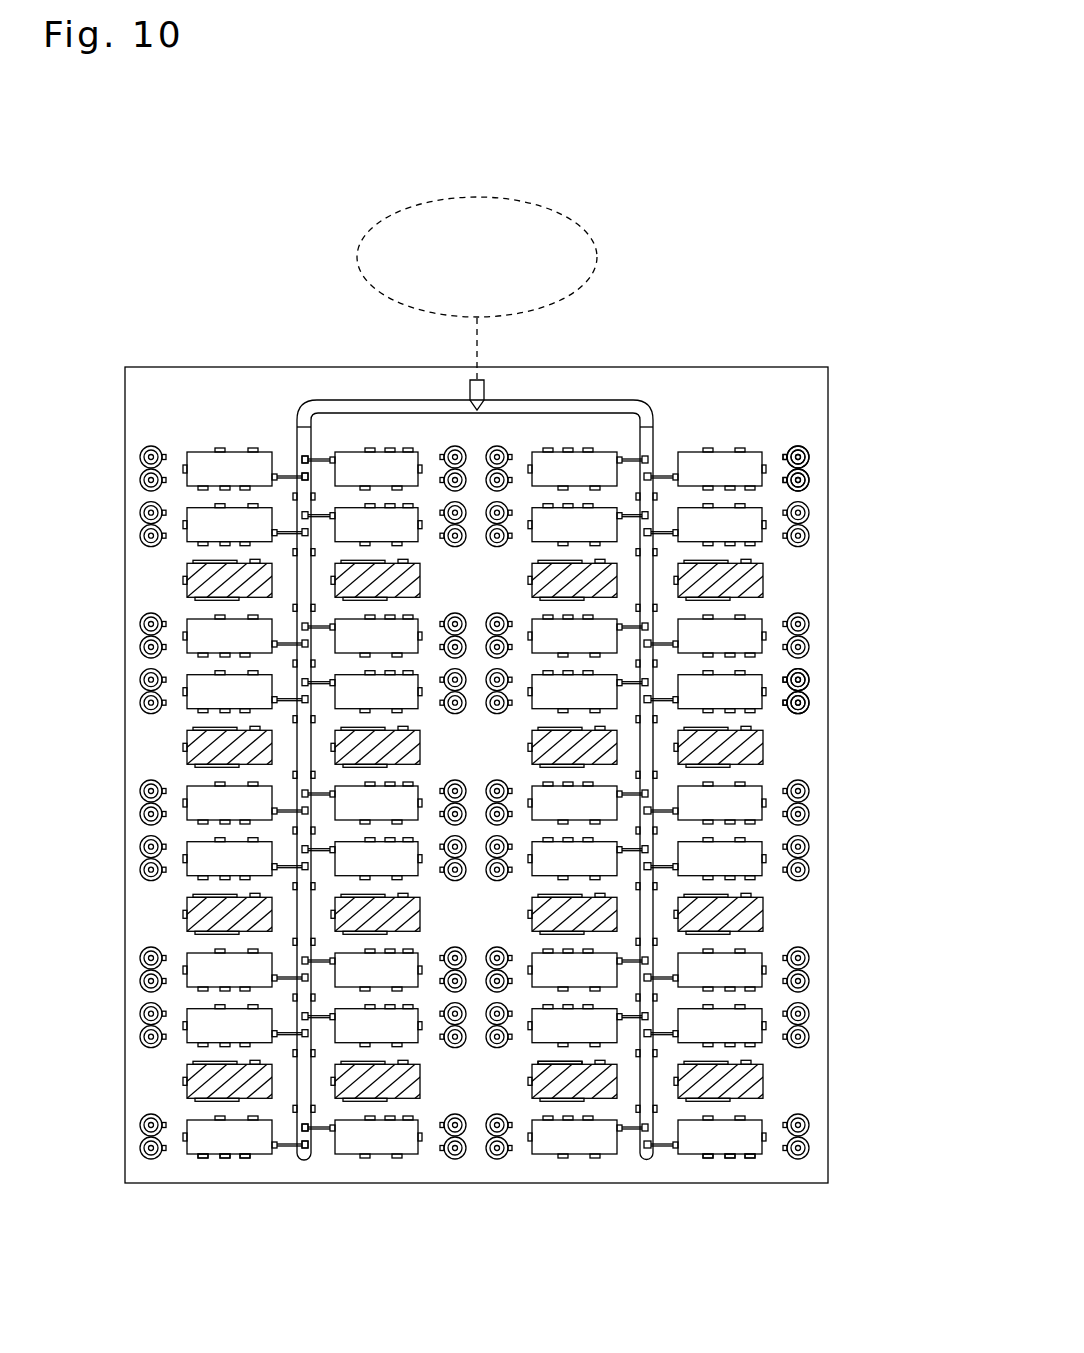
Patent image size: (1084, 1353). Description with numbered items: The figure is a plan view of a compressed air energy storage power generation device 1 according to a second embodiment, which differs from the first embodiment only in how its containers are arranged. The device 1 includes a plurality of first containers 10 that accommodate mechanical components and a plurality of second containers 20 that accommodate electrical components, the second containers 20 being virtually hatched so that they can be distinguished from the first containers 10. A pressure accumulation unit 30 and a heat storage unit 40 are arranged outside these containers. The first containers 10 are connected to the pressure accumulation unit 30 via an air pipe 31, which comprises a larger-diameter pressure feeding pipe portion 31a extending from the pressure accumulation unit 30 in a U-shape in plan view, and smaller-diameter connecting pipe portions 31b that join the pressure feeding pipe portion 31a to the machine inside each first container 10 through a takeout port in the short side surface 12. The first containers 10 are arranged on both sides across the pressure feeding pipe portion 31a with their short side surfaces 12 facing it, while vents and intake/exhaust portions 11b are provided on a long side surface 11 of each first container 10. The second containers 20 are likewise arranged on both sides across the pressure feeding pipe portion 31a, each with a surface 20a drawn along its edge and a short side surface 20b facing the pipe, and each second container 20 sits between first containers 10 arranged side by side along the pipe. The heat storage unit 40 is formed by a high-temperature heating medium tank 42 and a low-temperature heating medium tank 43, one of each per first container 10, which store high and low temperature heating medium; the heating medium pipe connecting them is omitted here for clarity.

The CAES power generation device 1 is at (723, 258).
The first container 10 is at (198, 1137).
The long side surface 11 is at (257, 1158).
The intake/exhaust portion 11b is at (240, 1158).
The short side surface 12 is at (316, 1132).
The second container 20 is at (412, 1097).
The component top portion 20a is at (578, 1066).
The short side surface 20b is at (610, 1085).
The pressure accumulation unit 30 is at (510, 273).
The air pipe 31 is at (397, 662).
The pressure feeding pipe portion 31a is at (318, 407).
The connecting pipe portion 31b is at (302, 476).
The heat storage unit 40 is at (873, 577).
The high-temperature heating medium tank 42 is at (839, 605).
The low-temperature heating medium tank 43 is at (807, 450).